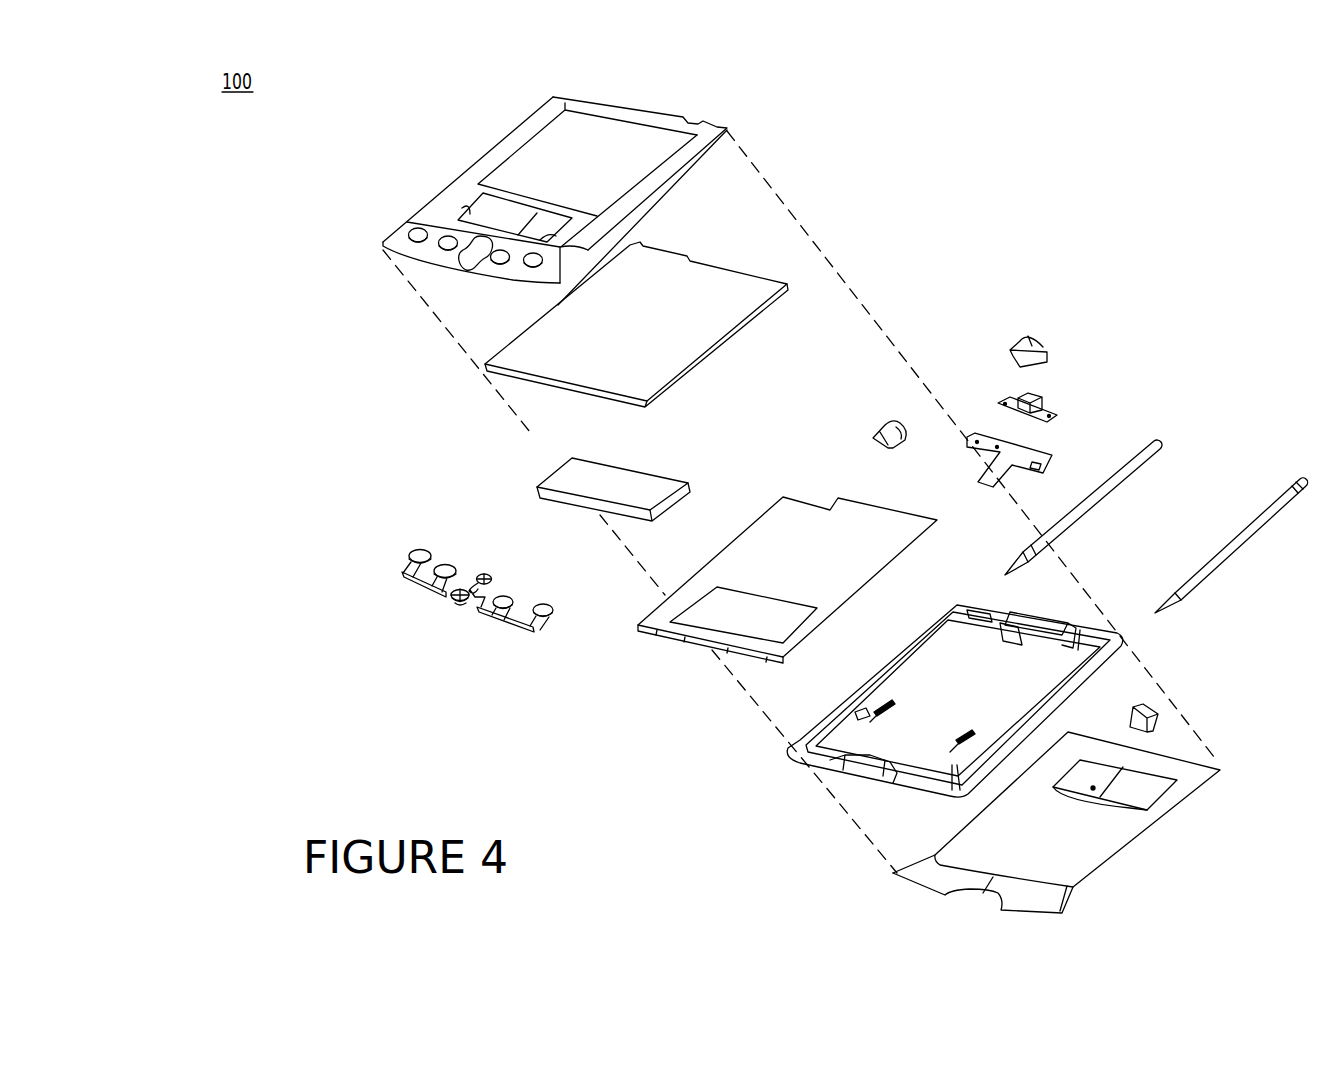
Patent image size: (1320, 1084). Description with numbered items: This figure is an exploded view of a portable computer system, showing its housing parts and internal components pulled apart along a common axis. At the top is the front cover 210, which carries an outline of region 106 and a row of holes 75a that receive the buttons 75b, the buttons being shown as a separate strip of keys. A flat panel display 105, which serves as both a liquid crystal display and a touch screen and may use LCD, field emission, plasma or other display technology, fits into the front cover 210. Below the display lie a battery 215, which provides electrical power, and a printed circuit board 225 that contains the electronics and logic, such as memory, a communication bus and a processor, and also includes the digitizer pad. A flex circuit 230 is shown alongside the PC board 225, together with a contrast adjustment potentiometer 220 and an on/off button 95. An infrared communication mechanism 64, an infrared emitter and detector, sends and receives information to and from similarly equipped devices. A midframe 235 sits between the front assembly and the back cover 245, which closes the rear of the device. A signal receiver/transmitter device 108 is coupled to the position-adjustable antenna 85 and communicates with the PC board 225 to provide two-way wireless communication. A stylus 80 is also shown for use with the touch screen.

The front cover 210 is at (733, 124).
The region 106 is at (483, 211).
The holes 75a is at (385, 240).
The flat panel display 105 is at (758, 262).
The battery 215 is at (536, 470).
The buttons 75b is at (403, 552).
The printed circuit board 225 is at (652, 597).
The midframe 235 is at (1116, 675).
The receiver/transmitter device 108 is at (1172, 720).
The back cover 245 is at (1136, 870).
The contrast adjustment 220 is at (876, 415).
The on/off button 95 is at (1035, 327).
The infrared communication mechanism 64 is at (1066, 403).
The flex circuit 230 is at (1058, 445).
The position-adjustable antenna 85 is at (1164, 438).
The stylus 80 is at (1266, 540).